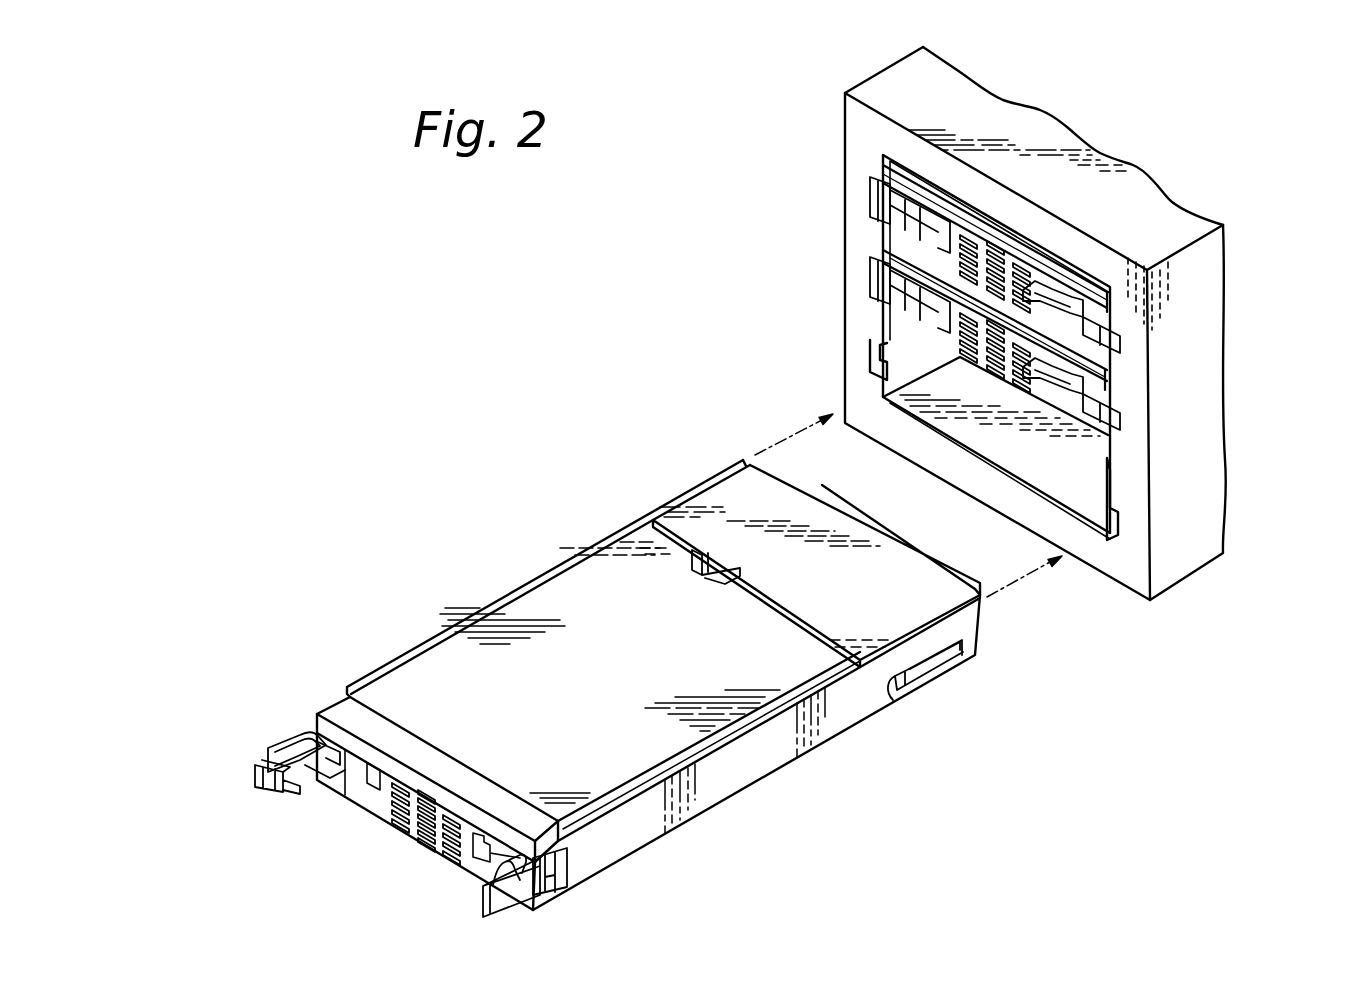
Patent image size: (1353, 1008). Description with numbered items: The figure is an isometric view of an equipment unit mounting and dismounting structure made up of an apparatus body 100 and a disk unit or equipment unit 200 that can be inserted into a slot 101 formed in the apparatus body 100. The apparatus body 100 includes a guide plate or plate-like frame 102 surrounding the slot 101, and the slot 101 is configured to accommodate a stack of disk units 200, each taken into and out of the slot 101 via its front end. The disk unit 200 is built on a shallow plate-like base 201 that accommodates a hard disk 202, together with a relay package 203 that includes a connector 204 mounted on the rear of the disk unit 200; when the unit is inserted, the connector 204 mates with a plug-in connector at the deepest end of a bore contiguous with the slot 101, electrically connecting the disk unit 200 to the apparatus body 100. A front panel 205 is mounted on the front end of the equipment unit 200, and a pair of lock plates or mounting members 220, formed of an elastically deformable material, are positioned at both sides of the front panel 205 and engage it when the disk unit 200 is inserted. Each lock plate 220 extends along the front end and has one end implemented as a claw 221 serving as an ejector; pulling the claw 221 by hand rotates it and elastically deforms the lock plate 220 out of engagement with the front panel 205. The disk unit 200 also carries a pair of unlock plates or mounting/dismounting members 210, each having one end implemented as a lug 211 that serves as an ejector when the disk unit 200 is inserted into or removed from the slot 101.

The apparatus body 100 is at (1196, 417).
The slot 101 is at (1105, 465).
The guide plate or plate-like frame 102 is at (1027, 122).
The disk unit or equipment unit 200 is at (490, 648).
The base 201 is at (842, 720).
The hard disk 202 is at (583, 573).
The relay package 203 is at (723, 522).
The connector 204 is at (857, 520).
The front panel 205 is at (378, 815).
The unlock plate or mounting/dismounting member 210 is at (253, 778).
The lug 211 is at (565, 878).
The lock plate or mounting member 220 is at (283, 745).
The claw 221 is at (570, 862).